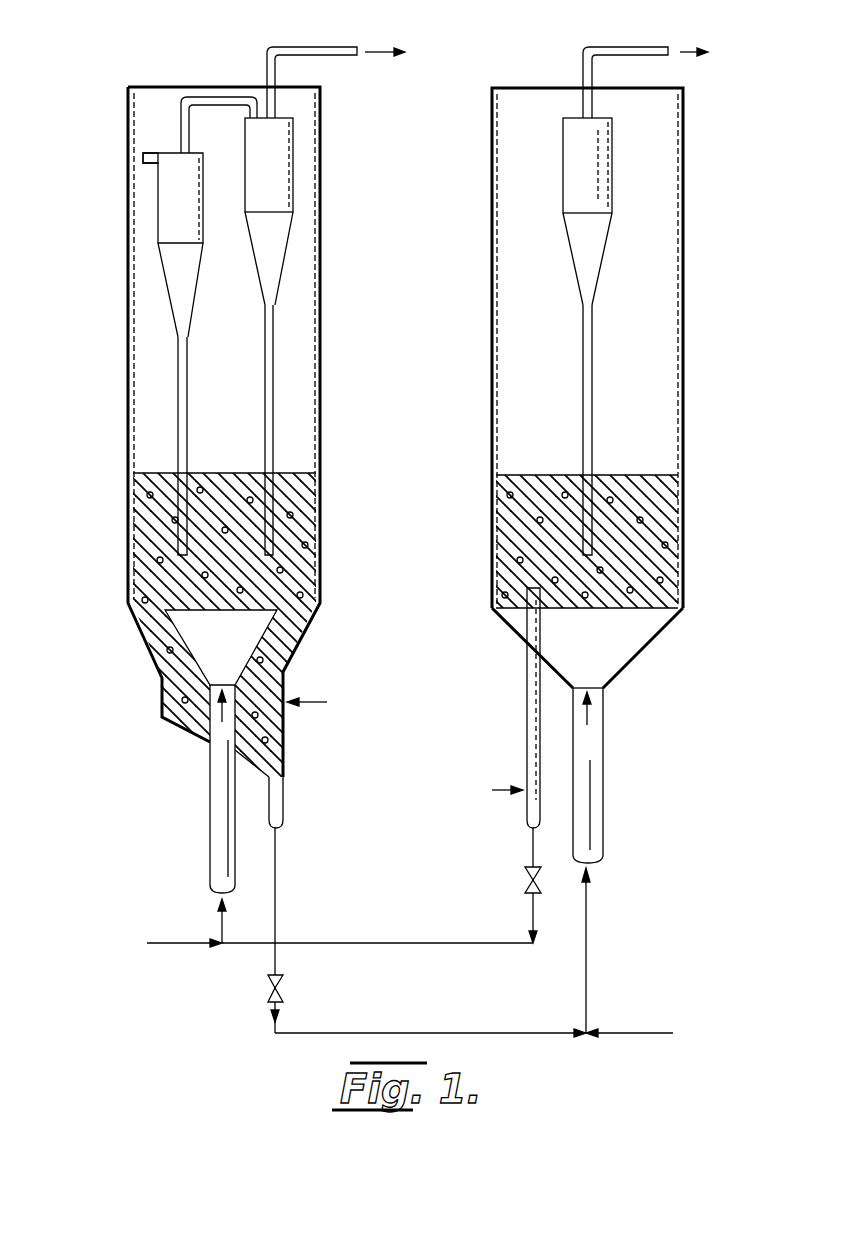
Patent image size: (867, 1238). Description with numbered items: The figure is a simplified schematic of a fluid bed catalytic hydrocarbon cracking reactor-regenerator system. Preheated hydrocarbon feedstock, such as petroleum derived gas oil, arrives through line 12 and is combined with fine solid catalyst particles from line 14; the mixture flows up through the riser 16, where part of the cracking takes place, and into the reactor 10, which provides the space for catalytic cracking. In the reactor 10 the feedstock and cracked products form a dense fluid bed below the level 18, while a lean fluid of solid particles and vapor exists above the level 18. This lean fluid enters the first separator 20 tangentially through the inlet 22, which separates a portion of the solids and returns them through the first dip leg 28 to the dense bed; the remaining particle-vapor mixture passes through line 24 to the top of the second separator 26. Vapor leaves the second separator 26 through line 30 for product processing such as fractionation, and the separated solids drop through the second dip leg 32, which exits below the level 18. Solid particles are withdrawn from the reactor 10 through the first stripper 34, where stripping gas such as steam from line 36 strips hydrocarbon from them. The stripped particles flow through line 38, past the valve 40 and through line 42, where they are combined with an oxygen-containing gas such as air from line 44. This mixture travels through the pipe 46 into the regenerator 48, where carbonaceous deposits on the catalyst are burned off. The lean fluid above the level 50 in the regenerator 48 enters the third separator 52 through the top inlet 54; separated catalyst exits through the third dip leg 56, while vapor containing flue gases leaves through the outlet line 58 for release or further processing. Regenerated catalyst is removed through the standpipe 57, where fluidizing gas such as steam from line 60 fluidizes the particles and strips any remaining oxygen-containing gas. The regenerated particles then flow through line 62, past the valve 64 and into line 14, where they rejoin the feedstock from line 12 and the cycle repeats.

The reactor 10 is at (127, 393).
The line 12 is at (175, 948).
The line 14 is at (398, 922).
The riser 16 is at (210, 840).
The level 18 is at (225, 452).
The first separator 20 is at (207, 217).
The inlet 22 is at (165, 133).
The line 24 is at (218, 97).
The second separator 26 is at (247, 136).
The first dip leg 28 is at (193, 415).
The line 30 is at (325, 58).
The second dip leg 32 is at (265, 358).
The first stripper 34 is at (300, 745).
The line 36 is at (327, 680).
The line 38 is at (287, 883).
The valve 40 is at (293, 982).
The line 42 is at (453, 1010).
The line 44 is at (633, 1028).
The pipe 46 is at (615, 783).
The regenerator 48 is at (490, 365).
The level 50 is at (547, 455).
The third separator 52 is at (563, 180).
The top inlet 54 is at (577, 117).
The third dip leg 56 is at (583, 380).
The standpipe 57 is at (525, 708).
The outlet line 58 is at (643, 58).
The line 60 is at (492, 790).
The line 62 is at (527, 845).
The valve 64 is at (523, 872).